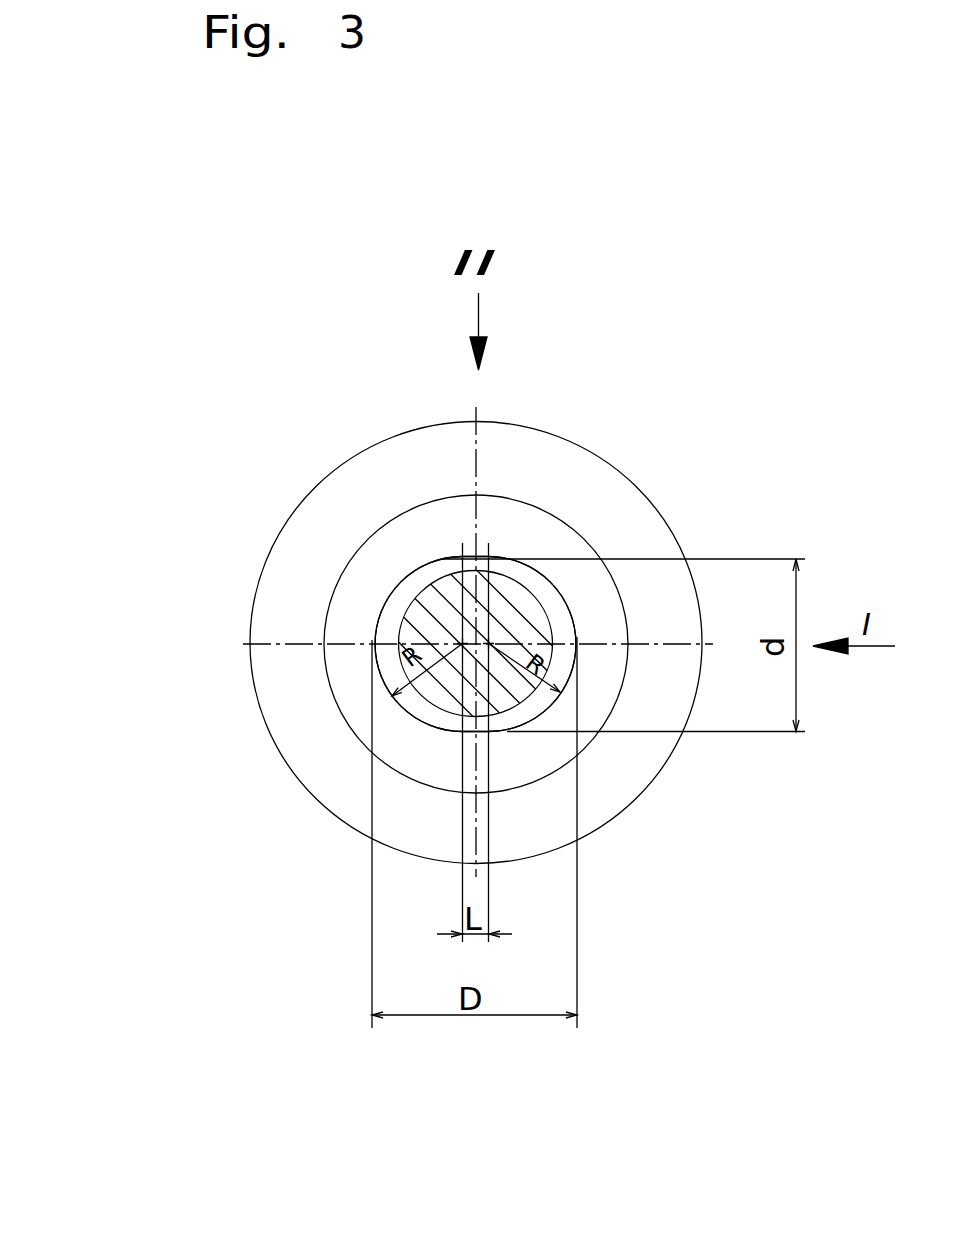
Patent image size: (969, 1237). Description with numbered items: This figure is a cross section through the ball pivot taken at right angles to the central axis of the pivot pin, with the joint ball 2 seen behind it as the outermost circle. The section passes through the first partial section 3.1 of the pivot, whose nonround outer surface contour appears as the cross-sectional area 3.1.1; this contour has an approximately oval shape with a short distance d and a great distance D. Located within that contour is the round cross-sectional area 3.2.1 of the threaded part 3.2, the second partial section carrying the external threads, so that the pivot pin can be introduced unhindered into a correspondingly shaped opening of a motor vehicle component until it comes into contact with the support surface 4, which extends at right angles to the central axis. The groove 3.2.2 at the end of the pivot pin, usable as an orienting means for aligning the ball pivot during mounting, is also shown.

The joint ball 2 is at (674, 538).
The support surface 4 is at (537, 622).
The first partial section 3.1 is at (329, 632).
The cross-sectional area 3.1.1 is at (352, 606).
The threaded part 3.2 is at (386, 556).
The cross-sectional area 3.2.1 is at (336, 644).
The groove 3.2.2 is at (595, 668).